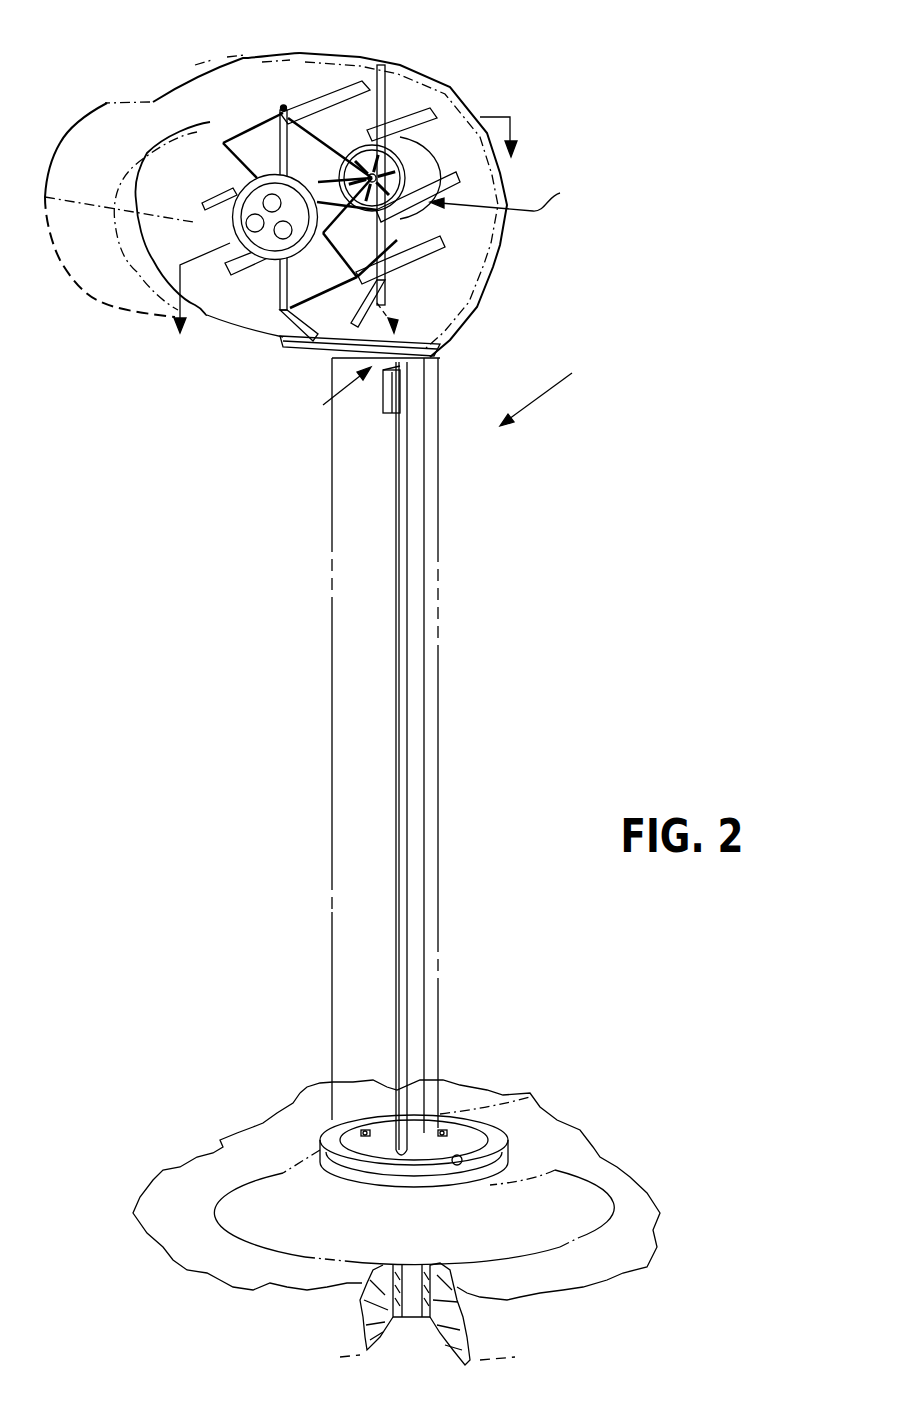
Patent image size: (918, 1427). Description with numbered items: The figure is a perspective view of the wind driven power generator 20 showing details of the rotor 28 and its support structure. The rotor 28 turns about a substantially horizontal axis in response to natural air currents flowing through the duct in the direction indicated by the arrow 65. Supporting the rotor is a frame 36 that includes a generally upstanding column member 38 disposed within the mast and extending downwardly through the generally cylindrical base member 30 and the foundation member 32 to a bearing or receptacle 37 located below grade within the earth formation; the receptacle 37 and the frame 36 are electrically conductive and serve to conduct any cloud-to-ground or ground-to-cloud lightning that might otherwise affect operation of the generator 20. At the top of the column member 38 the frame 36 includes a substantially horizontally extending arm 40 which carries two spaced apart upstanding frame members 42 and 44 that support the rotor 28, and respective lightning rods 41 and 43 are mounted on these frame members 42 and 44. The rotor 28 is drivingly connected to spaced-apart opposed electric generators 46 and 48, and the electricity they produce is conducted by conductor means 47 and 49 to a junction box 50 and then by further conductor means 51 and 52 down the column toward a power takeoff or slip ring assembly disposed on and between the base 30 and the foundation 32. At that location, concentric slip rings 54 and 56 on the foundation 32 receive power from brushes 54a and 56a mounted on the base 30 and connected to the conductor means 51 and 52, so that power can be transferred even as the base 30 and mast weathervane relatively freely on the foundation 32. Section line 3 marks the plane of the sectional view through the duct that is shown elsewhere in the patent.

The wind driven power generator 20 is at (549, 386).
The rotor 28 is at (327, 80).
The base member 30 is at (530, 1096).
The foundation member 32 is at (545, 1152).
The frame 36 is at (331, 394).
The bearing or receptacle 37 is at (460, 1293).
The column member 38 is at (425, 710).
The arm 40 is at (425, 335).
The lightning rod 41 is at (278, 110).
The upstanding frame member 42 is at (258, 330).
The lightning rod 43 is at (384, 78).
The upstanding frame member 44 is at (426, 232).
The electric generator 46 is at (238, 235).
The conductor means 47 is at (300, 350).
The electric generator 48 is at (412, 157).
The conductor means 49 is at (398, 300).
The junction box 50 is at (383, 402).
The conductor means 51 is at (397, 612).
The conductor means 52 is at (408, 540).
The slip ring 54 is at (318, 1147).
The brush 54a is at (362, 1128).
The slip ring 56 is at (459, 1166).
The brush 56a is at (448, 1120).
The wind flow direction arrow 65 is at (512, 195).
The section line 3- 3 is at (348, 240).